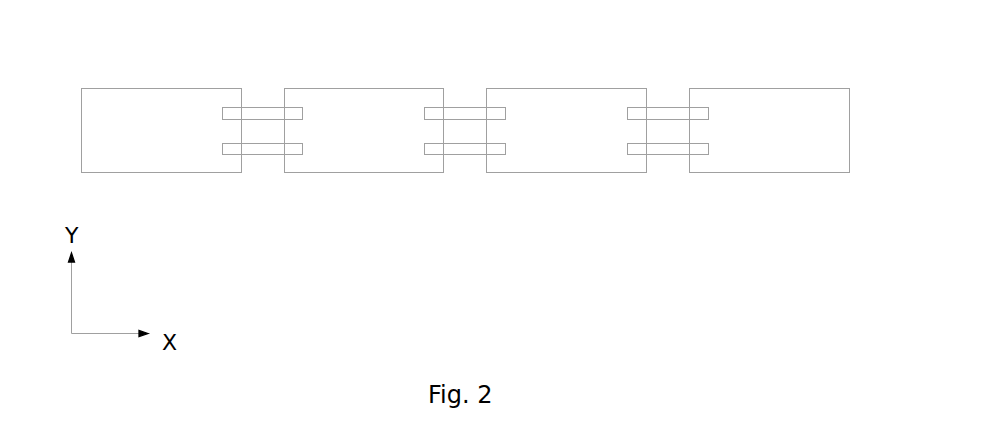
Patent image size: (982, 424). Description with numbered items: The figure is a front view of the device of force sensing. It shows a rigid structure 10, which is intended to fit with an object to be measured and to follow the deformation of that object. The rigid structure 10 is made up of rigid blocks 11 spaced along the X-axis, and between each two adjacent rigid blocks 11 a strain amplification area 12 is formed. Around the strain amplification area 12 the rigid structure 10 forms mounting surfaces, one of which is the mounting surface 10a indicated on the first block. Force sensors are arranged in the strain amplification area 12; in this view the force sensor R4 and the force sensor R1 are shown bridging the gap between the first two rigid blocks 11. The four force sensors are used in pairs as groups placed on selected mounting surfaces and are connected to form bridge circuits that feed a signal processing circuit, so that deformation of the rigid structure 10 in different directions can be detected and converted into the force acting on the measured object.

The rigid structure 10 is at (466, 149).
The mounting surface 10a is at (156, 143).
The rigid block 11 is at (205, 118).
The strain amplification area 12 is at (466, 152).
The force sensor R1 is at (262, 148).
The force sensor R4 is at (258, 112).